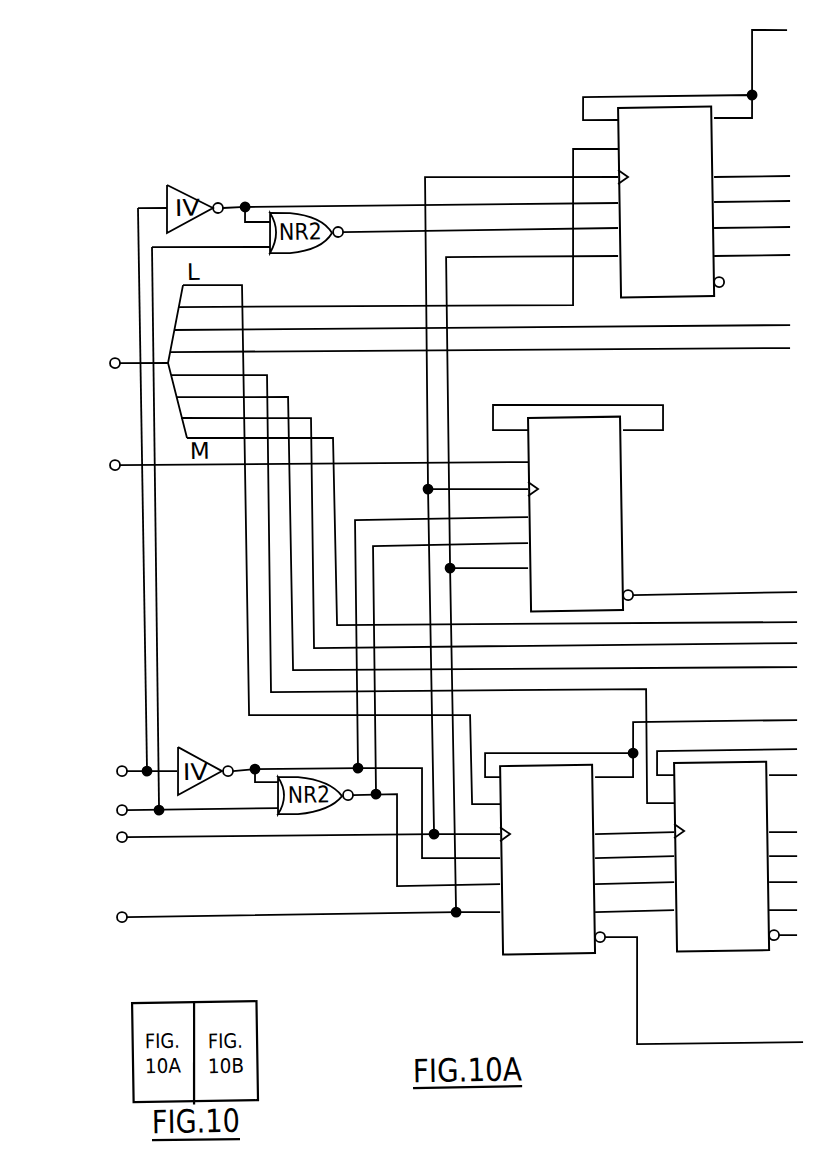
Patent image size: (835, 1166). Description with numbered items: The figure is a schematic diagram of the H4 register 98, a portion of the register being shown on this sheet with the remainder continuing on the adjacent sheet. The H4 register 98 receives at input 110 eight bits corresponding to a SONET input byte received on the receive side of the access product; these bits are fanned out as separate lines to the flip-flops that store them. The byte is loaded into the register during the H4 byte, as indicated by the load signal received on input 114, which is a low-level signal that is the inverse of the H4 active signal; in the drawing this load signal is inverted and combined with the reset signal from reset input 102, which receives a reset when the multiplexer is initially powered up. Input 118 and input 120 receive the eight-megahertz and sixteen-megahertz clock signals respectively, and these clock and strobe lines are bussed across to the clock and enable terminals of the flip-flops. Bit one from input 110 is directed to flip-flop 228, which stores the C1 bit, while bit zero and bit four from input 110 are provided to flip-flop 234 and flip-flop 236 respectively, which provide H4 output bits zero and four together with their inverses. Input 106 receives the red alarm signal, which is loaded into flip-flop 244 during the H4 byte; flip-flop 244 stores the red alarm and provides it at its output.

The H4 register 98 is at (652, 78).
The flip-flop 228 is at (665, 308).
The flip-flop 244 is at (616, 480).
The flip-flop 234 is at (515, 961).
The flip-flop 236 is at (690, 961).
The input 110 is at (107, 358).
The input 106 is at (108, 473).
The input 114 is at (108, 764).
The reset input 102 is at (114, 817).
The input 120 is at (114, 844).
The input 118 is at (113, 915).